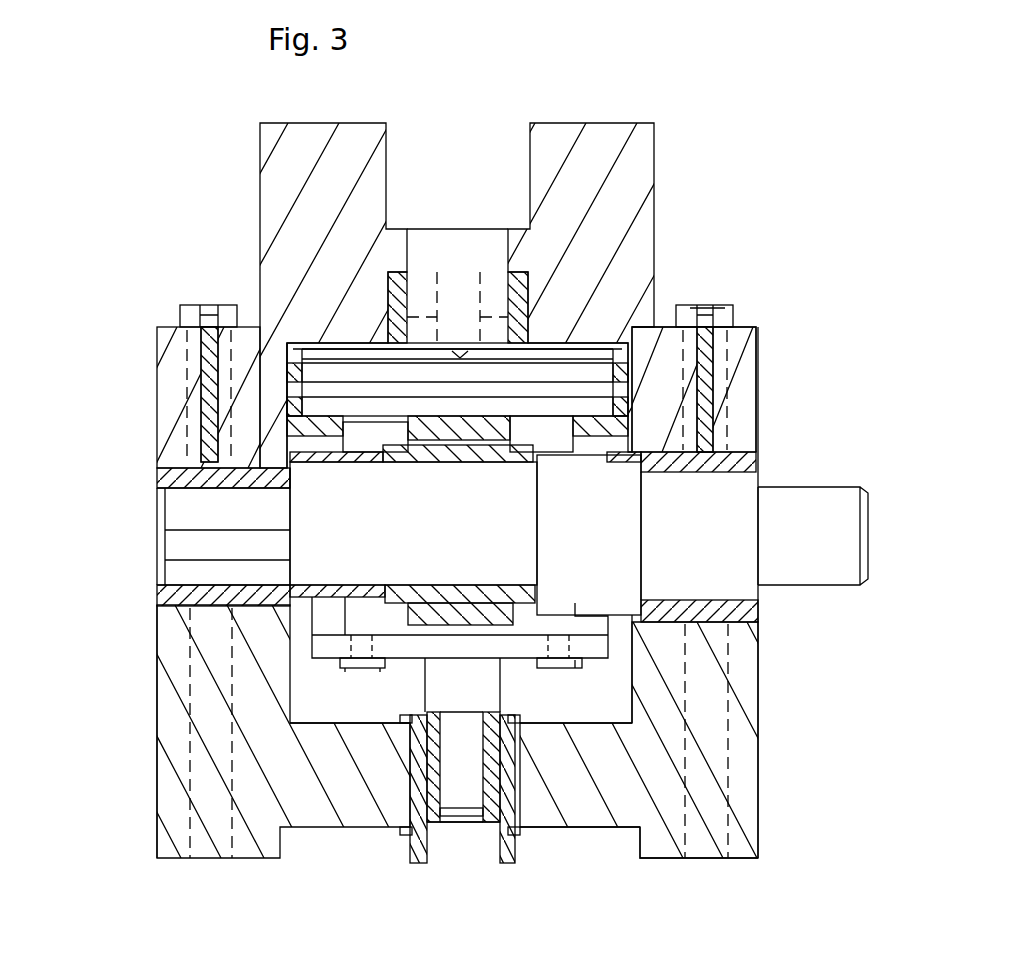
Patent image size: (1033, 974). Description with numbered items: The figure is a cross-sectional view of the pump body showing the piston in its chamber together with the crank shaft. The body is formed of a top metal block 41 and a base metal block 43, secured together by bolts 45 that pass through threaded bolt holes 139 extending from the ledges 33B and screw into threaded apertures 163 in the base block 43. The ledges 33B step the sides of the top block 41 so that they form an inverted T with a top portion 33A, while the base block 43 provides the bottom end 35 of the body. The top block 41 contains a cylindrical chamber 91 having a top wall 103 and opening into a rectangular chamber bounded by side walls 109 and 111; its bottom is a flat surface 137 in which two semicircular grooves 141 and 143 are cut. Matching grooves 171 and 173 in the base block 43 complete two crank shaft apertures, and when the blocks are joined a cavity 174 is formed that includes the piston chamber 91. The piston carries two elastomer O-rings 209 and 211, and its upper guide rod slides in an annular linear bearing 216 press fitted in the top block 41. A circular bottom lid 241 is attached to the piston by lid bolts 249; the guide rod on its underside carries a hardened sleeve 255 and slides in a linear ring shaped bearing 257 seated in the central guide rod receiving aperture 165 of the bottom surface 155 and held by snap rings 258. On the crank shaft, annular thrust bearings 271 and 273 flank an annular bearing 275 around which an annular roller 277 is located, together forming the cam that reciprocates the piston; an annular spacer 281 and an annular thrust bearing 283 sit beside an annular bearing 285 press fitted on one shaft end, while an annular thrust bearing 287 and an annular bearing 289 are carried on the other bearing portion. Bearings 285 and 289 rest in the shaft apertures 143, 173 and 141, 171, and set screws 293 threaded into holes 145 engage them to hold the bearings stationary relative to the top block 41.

The top portion 33A is at (575, 122).
The ledges 33B is at (160, 327).
The top wall 103 is at (307, 348).
The elastomer O-ring 209 is at (262, 333).
The set screws 293 is at (208, 306).
The threaded bolt holes 139 is at (187, 356).
The threaded bolt holes 145 is at (193, 386).
The bolts 45 is at (668, 348).
The annular shaped linear bearing 216 is at (528, 293).
The cylindrical chamber 91 is at (600, 345).
The elastomer O-ring 211 is at (290, 403).
The semicircular groove 143 is at (167, 468).
The semicircular groove 141 is at (743, 450).
The top metal block 41 is at (757, 417).
The hardened sleeve 255 is at (462, 812).
The annular bearing 289 is at (710, 473).
The annular thrust bearing 287 is at (647, 597).
The annular thrust bearing 271 is at (395, 460).
The annular bearing 275 is at (473, 458).
The annular thrust bearing 273 is at (527, 458).
The annular spacer 281 is at (537, 500).
The annular thrust bearing 283 is at (283, 603).
The annular bearing 285 is at (205, 596).
The semicircular groove 173 is at (165, 607).
The semicircular groove 171 is at (757, 622).
The central guide rod receiving aperture 165 is at (516, 775).
The linear ring shaped bearing 257 is at (365, 668).
The snap rings 258 is at (412, 838).
The bolts 249 is at (352, 668).
The base metal block 43 is at (757, 712).
The threaded apertures 163 is at (215, 748).
The side wall 109 is at (632, 707).
The side wall 111 is at (185, 682).
The bottom surface 155 is at (315, 722).
The circular bottom lid 241 is at (592, 668).
The cavity 174 is at (567, 703).
The flat surface 137 is at (735, 858).
The bottom end 35 is at (565, 703).
The annular roller 277 is at (405, 722).